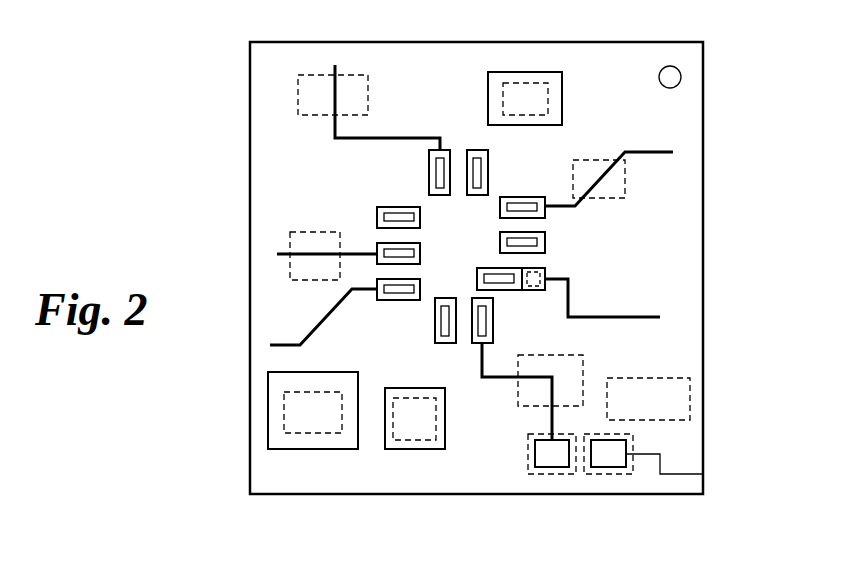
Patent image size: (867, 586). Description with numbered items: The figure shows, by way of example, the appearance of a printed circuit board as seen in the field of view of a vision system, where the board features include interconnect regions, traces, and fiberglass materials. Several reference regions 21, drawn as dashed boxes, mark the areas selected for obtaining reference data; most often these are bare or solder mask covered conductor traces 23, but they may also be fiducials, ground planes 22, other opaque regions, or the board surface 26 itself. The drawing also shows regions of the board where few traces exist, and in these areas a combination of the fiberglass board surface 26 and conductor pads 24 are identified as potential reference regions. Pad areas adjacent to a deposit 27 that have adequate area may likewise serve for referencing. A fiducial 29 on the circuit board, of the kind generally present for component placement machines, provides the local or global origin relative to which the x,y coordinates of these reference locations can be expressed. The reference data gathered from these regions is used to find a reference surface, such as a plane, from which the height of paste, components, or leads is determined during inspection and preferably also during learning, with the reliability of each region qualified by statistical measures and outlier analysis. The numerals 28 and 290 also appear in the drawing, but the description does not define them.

The reference region 21 is at (298, 95).
The ground plane 22 is at (315, 430).
The conductor trace 23 is at (335, 92).
The conductor pad 24 is at (610, 462).
The board surface 26 is at (528, 72).
The deposit 27 is at (545, 270).
The PCB1 label 28 is at (690, 398).
The fiducial 29 is at (681, 77).
The pad 290 is at (435, 322).